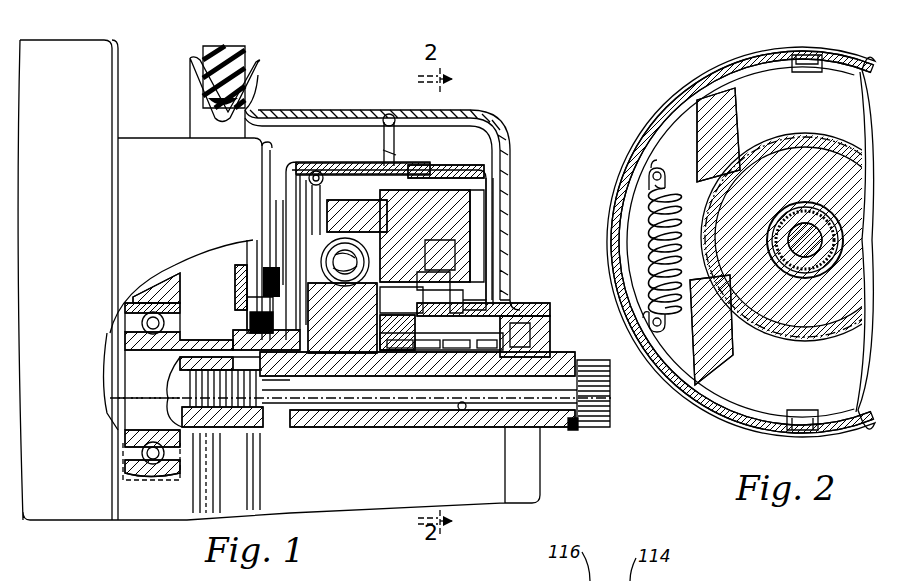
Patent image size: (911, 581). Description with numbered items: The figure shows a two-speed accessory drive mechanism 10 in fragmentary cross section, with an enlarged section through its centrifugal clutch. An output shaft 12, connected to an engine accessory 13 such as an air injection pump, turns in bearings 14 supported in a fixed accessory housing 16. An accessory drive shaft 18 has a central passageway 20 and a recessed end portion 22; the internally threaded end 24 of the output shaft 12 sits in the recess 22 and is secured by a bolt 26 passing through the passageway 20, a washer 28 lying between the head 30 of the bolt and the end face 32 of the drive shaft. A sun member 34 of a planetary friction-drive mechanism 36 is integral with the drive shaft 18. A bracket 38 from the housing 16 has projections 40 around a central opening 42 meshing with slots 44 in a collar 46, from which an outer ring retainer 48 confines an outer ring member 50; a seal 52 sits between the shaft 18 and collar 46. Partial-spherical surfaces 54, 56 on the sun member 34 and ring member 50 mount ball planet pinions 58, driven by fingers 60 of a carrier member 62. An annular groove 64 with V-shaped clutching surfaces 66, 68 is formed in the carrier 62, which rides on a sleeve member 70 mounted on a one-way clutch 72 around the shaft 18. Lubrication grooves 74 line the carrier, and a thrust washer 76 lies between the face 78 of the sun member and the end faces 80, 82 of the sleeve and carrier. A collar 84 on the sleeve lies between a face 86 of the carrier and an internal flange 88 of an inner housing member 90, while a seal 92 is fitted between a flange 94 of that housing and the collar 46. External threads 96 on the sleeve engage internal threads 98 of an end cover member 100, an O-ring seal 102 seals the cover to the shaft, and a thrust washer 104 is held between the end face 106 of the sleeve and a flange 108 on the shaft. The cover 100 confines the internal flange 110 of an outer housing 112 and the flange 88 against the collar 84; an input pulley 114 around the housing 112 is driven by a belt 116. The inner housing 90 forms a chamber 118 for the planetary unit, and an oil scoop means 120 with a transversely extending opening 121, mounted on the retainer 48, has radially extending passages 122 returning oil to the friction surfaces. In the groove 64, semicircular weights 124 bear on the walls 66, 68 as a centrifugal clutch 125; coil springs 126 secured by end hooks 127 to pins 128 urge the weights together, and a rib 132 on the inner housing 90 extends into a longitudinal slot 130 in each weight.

In FIG. 1, the two-speed accessory drive mechanism 10 is at (178, 85).
In FIG. 1, the output shaft 12 is at (130, 395).
In FIG. 1, the engine accessory 13 is at (58, 70).
In FIG. 1, the bearings 14 is at (130, 330).
In FIG. 1, the fixed accessory housing 16 is at (145, 290).
In FIG. 1, the accessory drive shaft 18 is at (296, 425).
In FIG. 2, the accessory drive shaft 18 is at (818, 210).
In FIG. 1, the central passageway 20 is at (452, 428).
In FIG. 1, the recessed end portion 22 is at (302, 370).
In FIG. 1, the internally threaded end 24 is at (125, 445).
In FIG. 1, the bolt 26 is at (358, 428).
In FIG. 2, the bolt 26 is at (800, 212).
In FIG. 1, the washer 28 is at (565, 430).
In FIG. 1, the head 30 is at (610, 420).
In FIG. 1, the end face 32 is at (582, 430).
In FIG. 1, the sun member 34 is at (272, 267).
In FIG. 1, the planetary friction-drive mechanism 36 is at (300, 195).
In FIG. 1, the bracket 38 is at (258, 265).
In FIG. 1, the projections 40 is at (250, 300).
In FIG. 1, the central opening 42 is at (248, 334).
In FIG. 1, the slots 44 is at (190, 300).
In FIG. 1, the collar 46 is at (340, 378).
In FIG. 1, the outer ring retainer 48 is at (320, 180).
In FIG. 1, the outer ring member 50 is at (352, 212).
In FIG. 1, the seal 52 is at (178, 358).
In FIG. 1, the partial-spherical surface 54 is at (382, 280).
In FIG. 1, the partial-spherical surface 56 is at (300, 225).
In FIG. 1, the ball planet pinions 58 is at (422, 258).
In FIG. 1, the fingers 60 is at (302, 242).
In FIG. 1, the carrier member 62 is at (430, 220).
In FIG. 2, the carrier member 62 is at (650, 245).
In FIG. 1, the annular groove 64 is at (492, 232).
In FIG. 2, the annular groove 64 is at (856, 150).
In FIG. 1, the clutching surface 66 is at (472, 202).
In FIG. 1, the clutching surface 68 is at (496, 192).
In FIG. 1, the sleeve member 70 is at (410, 377).
In FIG. 1, the one-way clutch 72 is at (440, 405).
In FIG. 2, the one-way clutch 72 is at (802, 310).
In FIG. 1, the lubrication grooves 74 is at (362, 332).
In FIG. 1, the thrust washer 76 is at (360, 377).
In FIG. 1, the face 78 is at (388, 302).
In FIG. 1, the end face 80 is at (334, 305).
In FIG. 1, the end face 82 is at (342, 290).
In FIG. 1, the collar 84 is at (500, 280).
In FIG. 1, the face 86 is at (448, 238).
In FIG. 1, the internal flange 88 is at (398, 336).
In FIG. 1, the inner housing member 90 is at (330, 160).
In FIG. 2, the inner housing member 90 is at (690, 84).
In FIG. 1, the seal 92 is at (238, 268).
In FIG. 1, the flange 94 is at (270, 250).
In FIG. 1, the external threads 96 is at (516, 308).
In FIG. 1, the internal threads 98 is at (522, 316).
In FIG. 1, the end cover member 100 is at (548, 345).
In FIG. 1, the O-ring seal 102 is at (542, 376).
In FIG. 1, the thrust washer 104 is at (455, 352).
In FIG. 1, the end face 106 is at (538, 334).
In FIG. 1, the flange 108 is at (506, 376).
In FIG. 1, the internal flange 110 is at (510, 305).
In FIG. 1, the outer housing 112 is at (512, 160).
In FIG. 2, the outer housing 112 is at (752, 428).
In FIG. 1, the input pulley 114 is at (262, 75).
In FIG. 1, the belt 116 is at (228, 47).
In FIG. 1, the chamber 118 is at (386, 150).
In FIG. 1, the oil scoop means 120 is at (302, 168).
In FIG. 1, the transversely extending opening 121 is at (316, 170).
In FIG. 1, the radially extending passages 122 is at (262, 190).
In FIG. 1, the semicircular weights 124 is at (456, 168).
In FIG. 2, the semicircular weights 124 is at (758, 80).
In FIG. 1, the centrifugal clutch 125 is at (500, 140).
In FIG. 2, the coil springs 126 is at (645, 180).
In FIG. 2, the end hooks 127 is at (657, 168).
In FIG. 2, the pins 128 is at (662, 172).
In FIG. 1, the longitudinal slot 130 is at (402, 163).
In FIG. 2, the longitudinal slot 130 is at (805, 58).
In FIG. 1, the rib 132 is at (490, 125).
In FIG. 2, the rib 132 is at (815, 58).